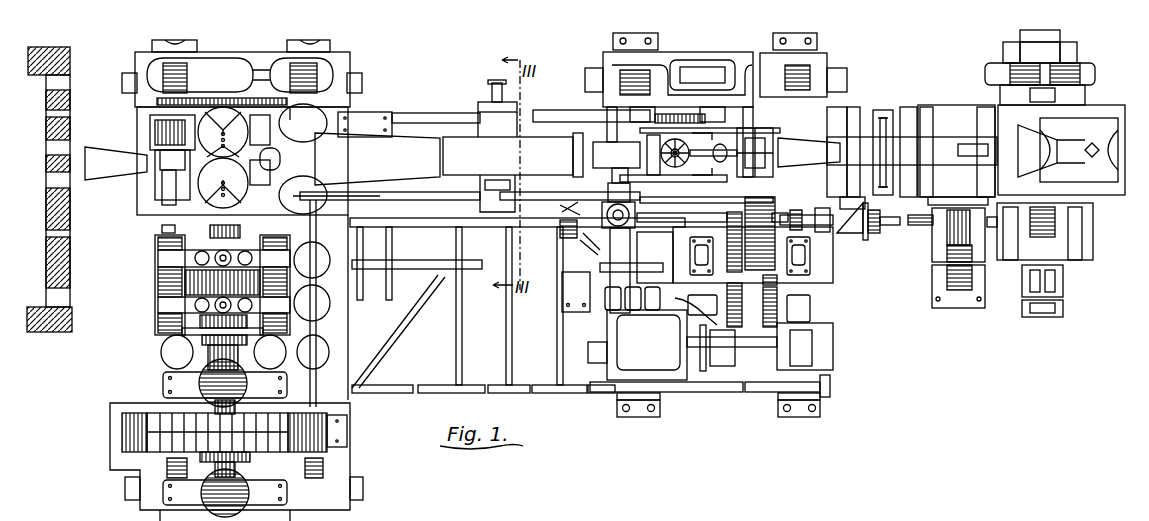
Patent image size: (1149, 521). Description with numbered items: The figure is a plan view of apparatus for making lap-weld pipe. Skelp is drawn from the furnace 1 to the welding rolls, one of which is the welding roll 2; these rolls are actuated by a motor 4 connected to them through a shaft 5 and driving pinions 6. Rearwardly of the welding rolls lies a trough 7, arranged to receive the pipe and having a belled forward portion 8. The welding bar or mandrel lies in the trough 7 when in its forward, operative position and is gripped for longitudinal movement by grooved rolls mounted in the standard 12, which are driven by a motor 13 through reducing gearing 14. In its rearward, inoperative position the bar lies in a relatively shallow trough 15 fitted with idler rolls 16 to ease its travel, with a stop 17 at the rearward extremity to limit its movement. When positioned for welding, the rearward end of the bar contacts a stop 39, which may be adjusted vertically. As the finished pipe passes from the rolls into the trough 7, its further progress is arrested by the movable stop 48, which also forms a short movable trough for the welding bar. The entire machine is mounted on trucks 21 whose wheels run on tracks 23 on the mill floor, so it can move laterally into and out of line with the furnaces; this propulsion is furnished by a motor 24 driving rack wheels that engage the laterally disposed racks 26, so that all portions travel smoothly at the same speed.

The furnace 1 is at (71, 210).
The welding roll 2 is at (195, 160).
The motor 4 is at (200, 433).
The shaft 5 is at (213, 412).
The driving pinions 6 is at (215, 288).
The trough 7 is at (417, 142).
The belled forward portion 8 is at (330, 145).
The standard 12 is at (675, 170).
The motor 13 is at (690, 87).
The reducing gearing 14 is at (648, 122).
The shallow trough 15 is at (948, 128).
The idler rolls 16 is at (808, 156).
The stop 17 is at (1020, 140).
The trucks 21 is at (612, 396).
The tracks 23 is at (655, 418).
The motor 24 is at (710, 288).
The racks 26 is at (832, 388).
The stop 39 is at (713, 160).
The movable stop 48 is at (600, 145).